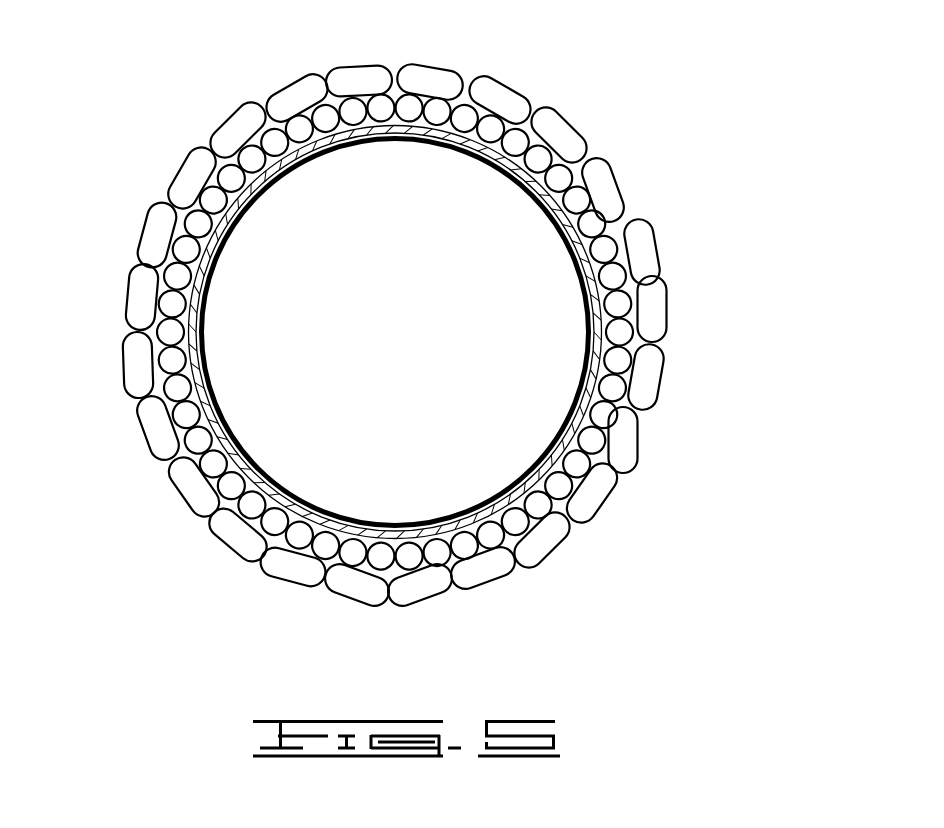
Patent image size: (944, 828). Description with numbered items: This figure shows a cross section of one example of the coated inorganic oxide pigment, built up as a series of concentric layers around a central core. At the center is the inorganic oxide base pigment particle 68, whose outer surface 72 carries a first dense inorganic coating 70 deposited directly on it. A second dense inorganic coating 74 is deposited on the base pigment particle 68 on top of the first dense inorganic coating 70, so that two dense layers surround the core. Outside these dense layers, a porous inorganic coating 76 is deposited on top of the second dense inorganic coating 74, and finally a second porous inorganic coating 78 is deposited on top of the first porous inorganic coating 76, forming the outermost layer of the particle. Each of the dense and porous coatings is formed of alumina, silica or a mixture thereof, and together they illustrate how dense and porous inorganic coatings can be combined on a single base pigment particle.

The inorganic oxide base pigment particle 68 is at (410, 325).
The dense inorganic coating 70 is at (533, 122).
The outer surface 72 is at (532, 208).
The second dense inorganic coating 74 is at (477, 133).
The porous inorganic coating 76 is at (308, 120).
The second porous inorganic coating 78 is at (358, 82).